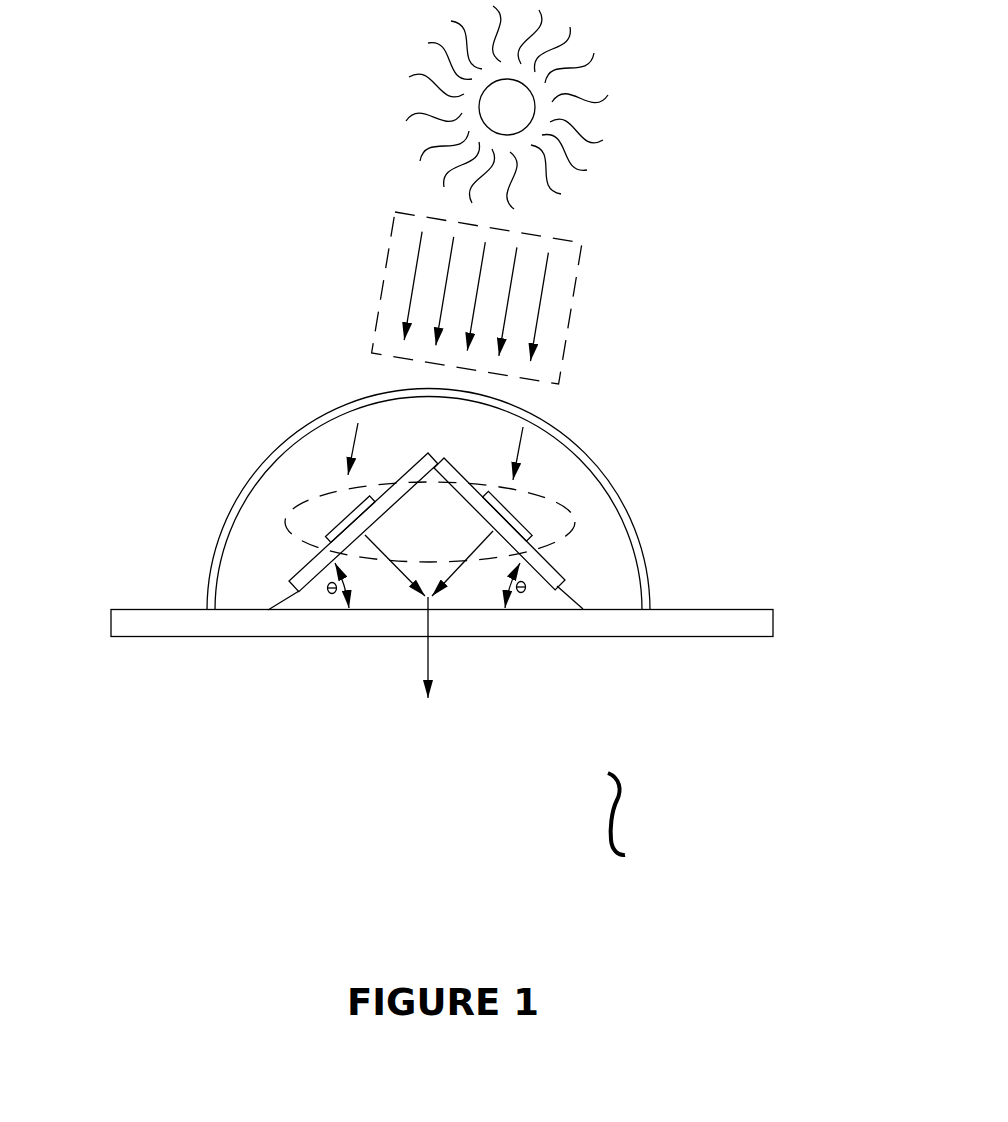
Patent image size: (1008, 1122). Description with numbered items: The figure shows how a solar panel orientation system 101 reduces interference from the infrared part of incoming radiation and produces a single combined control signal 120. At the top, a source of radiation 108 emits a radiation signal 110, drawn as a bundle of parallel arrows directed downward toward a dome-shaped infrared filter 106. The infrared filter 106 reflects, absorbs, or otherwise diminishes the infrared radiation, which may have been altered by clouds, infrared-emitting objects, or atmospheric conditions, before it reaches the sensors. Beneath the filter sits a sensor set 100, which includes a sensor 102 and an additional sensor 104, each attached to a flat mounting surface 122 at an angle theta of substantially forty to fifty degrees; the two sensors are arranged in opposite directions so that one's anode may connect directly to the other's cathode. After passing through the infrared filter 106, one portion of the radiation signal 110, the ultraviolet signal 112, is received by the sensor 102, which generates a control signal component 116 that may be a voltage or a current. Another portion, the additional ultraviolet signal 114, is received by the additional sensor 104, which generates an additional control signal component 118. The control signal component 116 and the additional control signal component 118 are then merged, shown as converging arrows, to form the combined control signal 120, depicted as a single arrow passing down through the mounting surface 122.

The sensor set 100 is at (563, 508).
The solar panel orientation system 101 is at (640, 852).
The sensor 102 is at (338, 516).
The additional sensor 104 is at (513, 513).
The infrared filter 106 is at (384, 391).
The source of radiation 108 is at (619, 114).
The radiation signal 110 is at (574, 289).
The ultraviolet signal 112 is at (350, 447).
The additional ultraviolet signal 114 is at (520, 448).
The control signal component 116 is at (402, 572).
The additional control signal component 118 is at (450, 577).
The combined control signal 120 is at (427, 662).
The mounting surface 122 is at (158, 608).